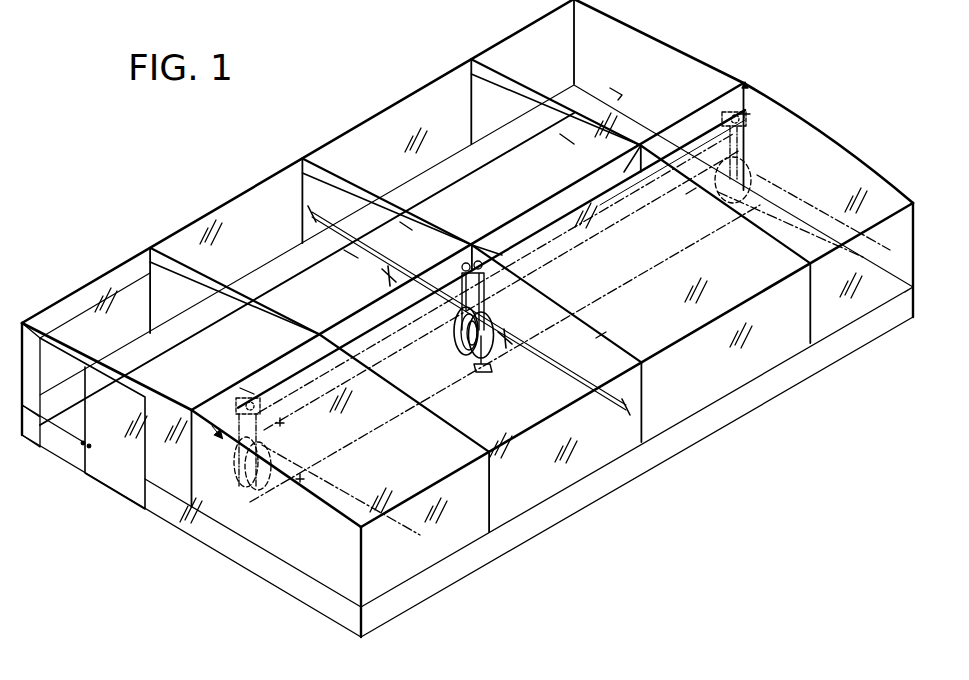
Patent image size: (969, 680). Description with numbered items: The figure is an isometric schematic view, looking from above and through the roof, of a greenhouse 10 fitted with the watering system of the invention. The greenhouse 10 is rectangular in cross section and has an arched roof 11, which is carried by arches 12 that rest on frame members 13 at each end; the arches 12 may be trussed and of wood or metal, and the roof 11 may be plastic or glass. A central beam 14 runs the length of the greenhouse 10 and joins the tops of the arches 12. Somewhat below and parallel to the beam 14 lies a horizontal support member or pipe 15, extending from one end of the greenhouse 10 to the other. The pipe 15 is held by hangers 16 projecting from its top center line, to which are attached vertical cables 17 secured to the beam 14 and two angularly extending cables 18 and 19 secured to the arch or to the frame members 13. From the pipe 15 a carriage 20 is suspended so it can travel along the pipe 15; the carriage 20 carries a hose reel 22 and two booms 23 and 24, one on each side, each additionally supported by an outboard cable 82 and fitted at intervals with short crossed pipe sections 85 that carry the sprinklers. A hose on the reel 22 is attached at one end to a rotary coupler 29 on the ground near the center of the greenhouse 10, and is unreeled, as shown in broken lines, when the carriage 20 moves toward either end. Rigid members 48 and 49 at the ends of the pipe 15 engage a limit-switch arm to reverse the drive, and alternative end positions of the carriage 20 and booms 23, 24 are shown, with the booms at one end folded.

The greenhouse 10 is at (524, 19).
The arched roof 11 is at (720, 40).
The arches 12 is at (796, 118).
The frame members 13 is at (577, 56).
The central beam 14 is at (547, 200).
The horizontal support member 15 is at (552, 221).
The hangers 16 is at (624, 172).
The vertical cables 17 is at (618, 146).
The angularly extending cable 18 is at (566, 134).
The angularly extending cable 19 is at (686, 194).
The carriage 20 is at (756, 148).
The hose reel 22 is at (458, 357).
The boom 23 is at (612, 91).
The boom 24 is at (809, 204).
The rotary coupler 29 is at (481, 375).
The rigid member 48 is at (212, 426).
The rigid member 49 is at (745, 116).
The cable 82 is at (386, 279).
The crossed pipe sections 85 is at (302, 218).